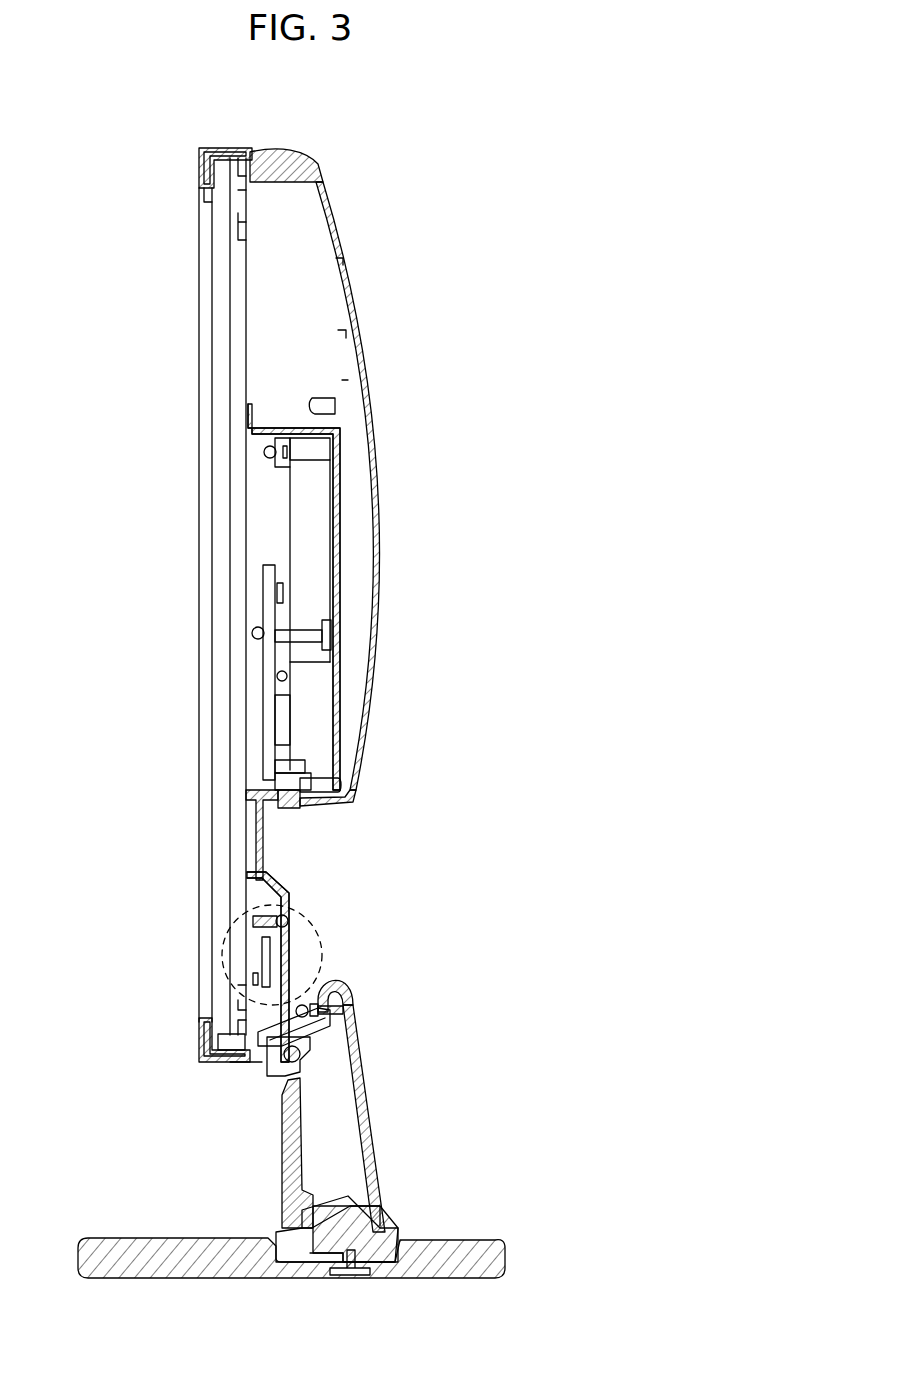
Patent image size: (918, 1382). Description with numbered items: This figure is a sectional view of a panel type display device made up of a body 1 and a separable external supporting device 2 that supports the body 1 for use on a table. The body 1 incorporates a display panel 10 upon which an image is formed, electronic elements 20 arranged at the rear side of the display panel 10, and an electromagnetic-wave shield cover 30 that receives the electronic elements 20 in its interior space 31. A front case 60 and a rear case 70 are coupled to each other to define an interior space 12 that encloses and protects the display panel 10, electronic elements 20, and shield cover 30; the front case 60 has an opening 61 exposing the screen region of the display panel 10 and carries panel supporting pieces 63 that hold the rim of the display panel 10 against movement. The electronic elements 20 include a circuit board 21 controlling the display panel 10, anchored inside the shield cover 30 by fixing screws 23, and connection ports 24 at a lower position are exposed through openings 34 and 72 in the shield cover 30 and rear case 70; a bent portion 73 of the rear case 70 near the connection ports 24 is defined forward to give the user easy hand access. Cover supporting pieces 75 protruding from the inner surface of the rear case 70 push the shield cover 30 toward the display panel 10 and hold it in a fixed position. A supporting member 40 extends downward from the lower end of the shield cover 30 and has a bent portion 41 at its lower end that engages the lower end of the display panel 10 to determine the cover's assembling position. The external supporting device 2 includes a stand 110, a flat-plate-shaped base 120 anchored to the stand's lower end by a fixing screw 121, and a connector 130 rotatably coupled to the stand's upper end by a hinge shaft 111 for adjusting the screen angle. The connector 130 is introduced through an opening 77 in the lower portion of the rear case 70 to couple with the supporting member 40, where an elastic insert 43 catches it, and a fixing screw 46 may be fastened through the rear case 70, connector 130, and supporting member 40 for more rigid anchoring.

The body 1 is at (160, 160).
The external supporting device 2 is at (566, 1090).
The display panel 10 is at (222, 312).
The interior space 12 is at (290, 296).
The electronic elements 20 is at (262, 552).
The circuit board 21 is at (265, 690).
The fixing screws 23 is at (252, 634).
The connection ports 24 is at (292, 808).
The electromagnetic-wave shield cover 30 is at (348, 520).
The interior space 31 is at (308, 536).
The openings 34 is at (343, 786).
The supporting member 40 is at (272, 894).
The bent portion 41 is at (242, 1062).
The insert 43 is at (266, 960).
The fixing screw 46 is at (275, 916).
The front case 60 is at (202, 148).
The opening 61 is at (206, 204).
The panel supporting pieces 63 is at (206, 1042).
The rear case 70 is at (322, 185).
The openings 72 is at (322, 804).
The bent portion 73 is at (256, 880).
The cover supporting pieces 75 is at (350, 398).
The opening 77 is at (343, 994).
The stand 110 is at (372, 1112).
The hinge shaft 111 is at (275, 1074).
The base 120 is at (484, 1240).
The fixing screw 121 is at (350, 1276).
The connector 130 is at (335, 1042).